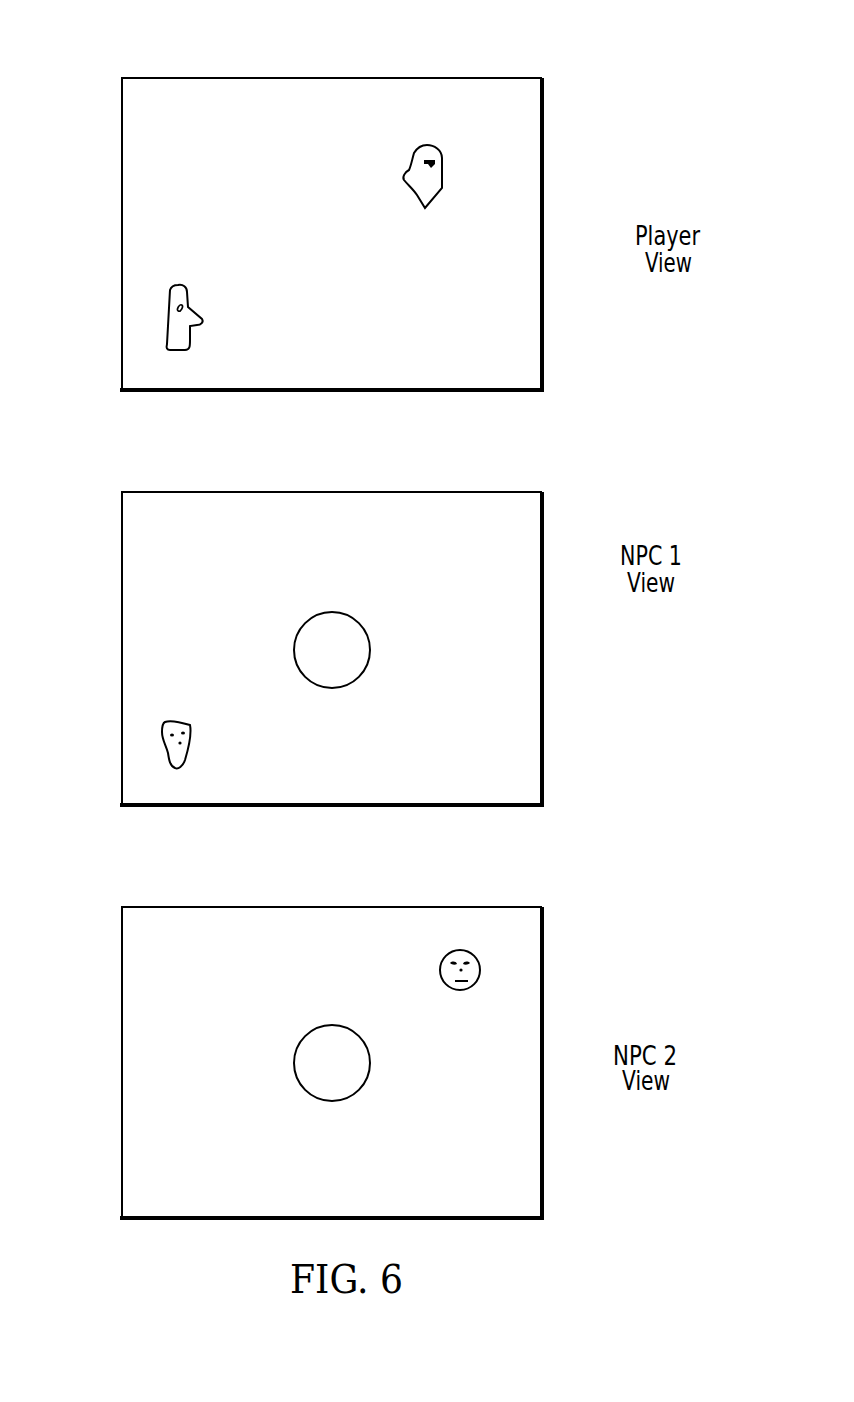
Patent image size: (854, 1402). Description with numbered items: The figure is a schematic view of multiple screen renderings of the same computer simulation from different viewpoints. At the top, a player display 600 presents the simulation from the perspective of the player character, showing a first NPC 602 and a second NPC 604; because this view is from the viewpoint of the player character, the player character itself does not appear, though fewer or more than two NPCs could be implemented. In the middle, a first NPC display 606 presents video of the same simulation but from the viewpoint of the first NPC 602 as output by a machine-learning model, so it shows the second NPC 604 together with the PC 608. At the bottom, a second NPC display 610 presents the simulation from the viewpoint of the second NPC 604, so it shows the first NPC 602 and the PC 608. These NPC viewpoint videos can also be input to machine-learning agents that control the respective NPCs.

The player display 600 is at (122, 232).
The first NPC 602 is at (428, 143).
The second NPC 604 is at (167, 326).
The first NPC display 606 is at (122, 648).
The PC 608 is at (332, 612).
The second NPC display 610 is at (122, 1064).